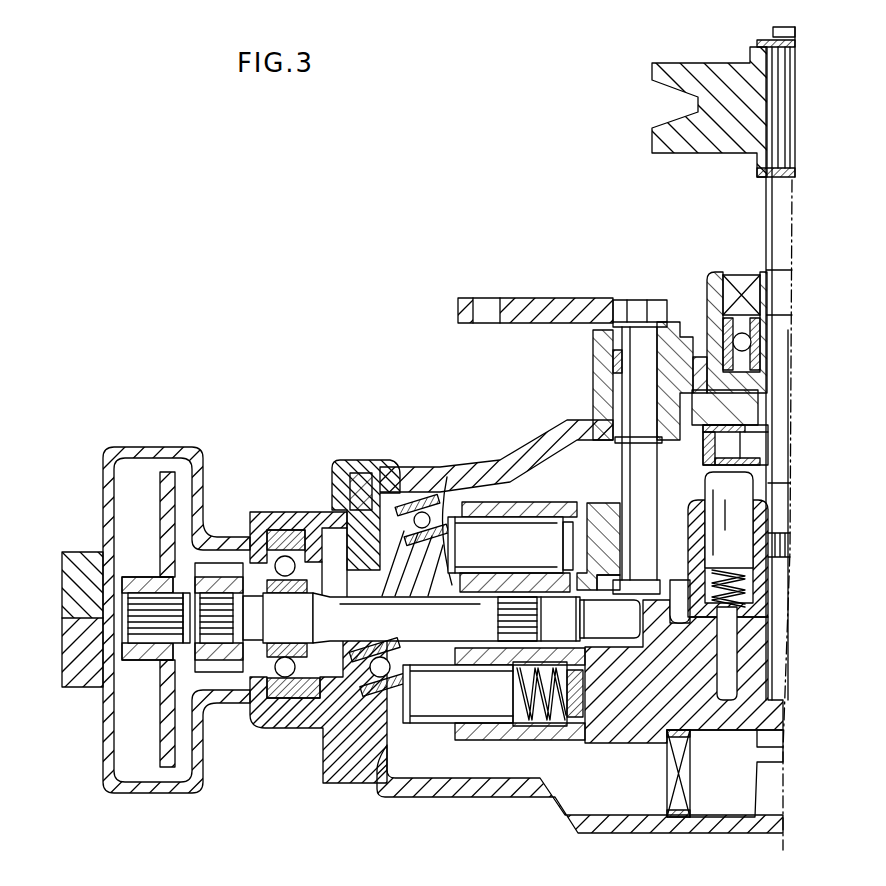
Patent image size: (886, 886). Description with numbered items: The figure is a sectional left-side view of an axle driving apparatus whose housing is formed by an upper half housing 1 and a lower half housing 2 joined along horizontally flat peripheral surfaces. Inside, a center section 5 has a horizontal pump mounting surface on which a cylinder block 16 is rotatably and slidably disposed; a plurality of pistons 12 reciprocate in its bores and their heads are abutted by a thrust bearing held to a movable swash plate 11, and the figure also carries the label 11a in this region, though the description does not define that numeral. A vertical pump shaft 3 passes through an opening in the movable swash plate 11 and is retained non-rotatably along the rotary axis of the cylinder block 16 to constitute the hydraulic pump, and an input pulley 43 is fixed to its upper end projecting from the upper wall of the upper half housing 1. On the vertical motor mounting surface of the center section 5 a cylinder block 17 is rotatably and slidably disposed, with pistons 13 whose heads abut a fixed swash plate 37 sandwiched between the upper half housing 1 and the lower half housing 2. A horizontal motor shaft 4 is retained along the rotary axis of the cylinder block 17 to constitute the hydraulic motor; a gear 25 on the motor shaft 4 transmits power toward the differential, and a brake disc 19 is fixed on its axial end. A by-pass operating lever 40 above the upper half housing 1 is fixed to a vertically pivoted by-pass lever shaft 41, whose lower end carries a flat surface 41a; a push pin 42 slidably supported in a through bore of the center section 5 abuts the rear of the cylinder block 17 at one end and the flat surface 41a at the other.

The upper half housing 1 is at (104, 495).
The lower half housing 2 is at (100, 733).
The pump shaft 3 is at (767, 203).
The motor shaft 4 is at (471, 638).
The center section 5 is at (775, 690).
The movable swash plate 11 is at (753, 413).
The holder flange 11a is at (750, 457).
The pistons 12 is at (753, 487).
The pistons 13 is at (490, 556).
The cylinder block 16 is at (763, 590).
The cylinder block 17 is at (493, 480).
The brake disc 19 is at (168, 470).
The gear 25 is at (222, 566).
The fixed swash plate 37 is at (440, 470).
The by-pass operating lever 40 is at (537, 298).
The by-pass lever shaft 41 is at (643, 330).
The flat surface 41a is at (600, 510).
The push pin 42 is at (590, 503).
The input pulley 43 is at (650, 140).